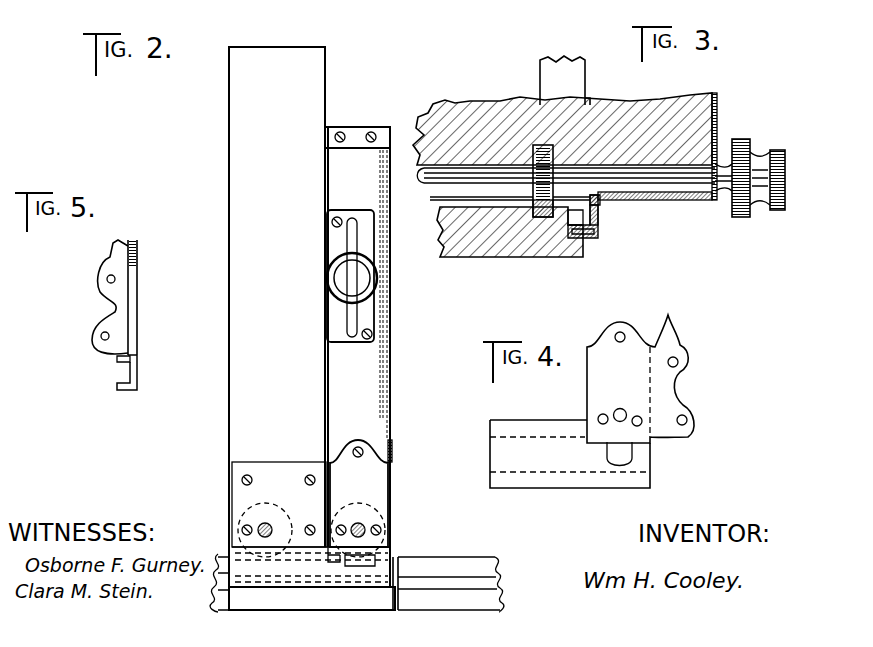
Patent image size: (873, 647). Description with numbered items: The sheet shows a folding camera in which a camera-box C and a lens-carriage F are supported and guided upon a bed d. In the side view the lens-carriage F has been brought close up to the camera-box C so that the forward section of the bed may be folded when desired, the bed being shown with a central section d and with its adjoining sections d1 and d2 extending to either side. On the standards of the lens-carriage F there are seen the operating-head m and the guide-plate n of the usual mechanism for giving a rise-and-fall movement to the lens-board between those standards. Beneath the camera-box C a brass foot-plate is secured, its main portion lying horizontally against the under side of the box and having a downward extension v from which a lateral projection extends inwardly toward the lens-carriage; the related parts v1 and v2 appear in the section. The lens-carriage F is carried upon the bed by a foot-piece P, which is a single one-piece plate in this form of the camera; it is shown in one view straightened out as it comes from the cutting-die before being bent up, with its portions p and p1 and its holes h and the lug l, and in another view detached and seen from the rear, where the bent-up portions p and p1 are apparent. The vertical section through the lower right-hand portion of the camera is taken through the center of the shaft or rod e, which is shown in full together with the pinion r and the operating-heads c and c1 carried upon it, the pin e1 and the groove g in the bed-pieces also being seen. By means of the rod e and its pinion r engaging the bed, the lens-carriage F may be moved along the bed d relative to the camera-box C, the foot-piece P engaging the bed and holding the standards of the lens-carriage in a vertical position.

In FIG. 2, the camera-box C is at (278, 328).
In FIG. 3, the camera-box C is at (720, 92).
In FIG. 2, the lens-carriage F is at (358, 357).
In FIG. 3, the lens-carriage F is at (565, 80).
In FIG. 2, the guide-plate n is at (350, 276).
In FIG. 2, the operating-head m is at (352, 278).
In FIG. 2, the foot-piece P is at (359, 493).
In FIG. 3, the foot-piece P is at (600, 226).
In FIG. 4, the foot-piece P is at (640, 379).
In FIG. 5, the foot-piece P is at (137, 305).
In FIG. 3, the plate arm p is at (600, 204).
In FIG. 4, the plate arm p is at (557, 428).
In FIG. 5, the plate arm p is at (117, 360).
In FIG. 3, the plate foot p1 is at (582, 236).
In FIG. 4, the plate foot p1 is at (565, 481).
In FIG. 5, the plate foot p1 is at (128, 392).
In FIG. 2, the hole h is at (255, 510).
In FIG. 3, the hole h is at (418, 192).
In FIG. 2, the shaft or rod e is at (270, 526).
In FIG. 3, the shaft or rod e is at (418, 171).
In FIG. 2, the pin e1 is at (365, 528).
In FIG. 2, the lug l is at (380, 557).
In FIG. 4, the lug l is at (619, 454).
In FIG. 2, the bed d is at (358, 601).
In FIG. 3, the bed d is at (506, 258).
In FIG. 2, the base extension right d1 is at (430, 561).
In FIG. 2, the base extension left d2 is at (228, 565).
In FIG. 2, the downward extension v is at (233, 546).
In FIG. 3, the downward extension v is at (600, 214).
In FIG. 3, the slide bracket v1 is at (588, 232).
In FIG. 3, the slide block v2 is at (573, 240).
In FIG. 2, the groove g is at (502, 590).
In FIG. 3, the roller r is at (542, 218).
In FIG. 3, the knurled wheel c is at (778, 212).
In FIG. 3, the knurled wheel c1 is at (745, 218).